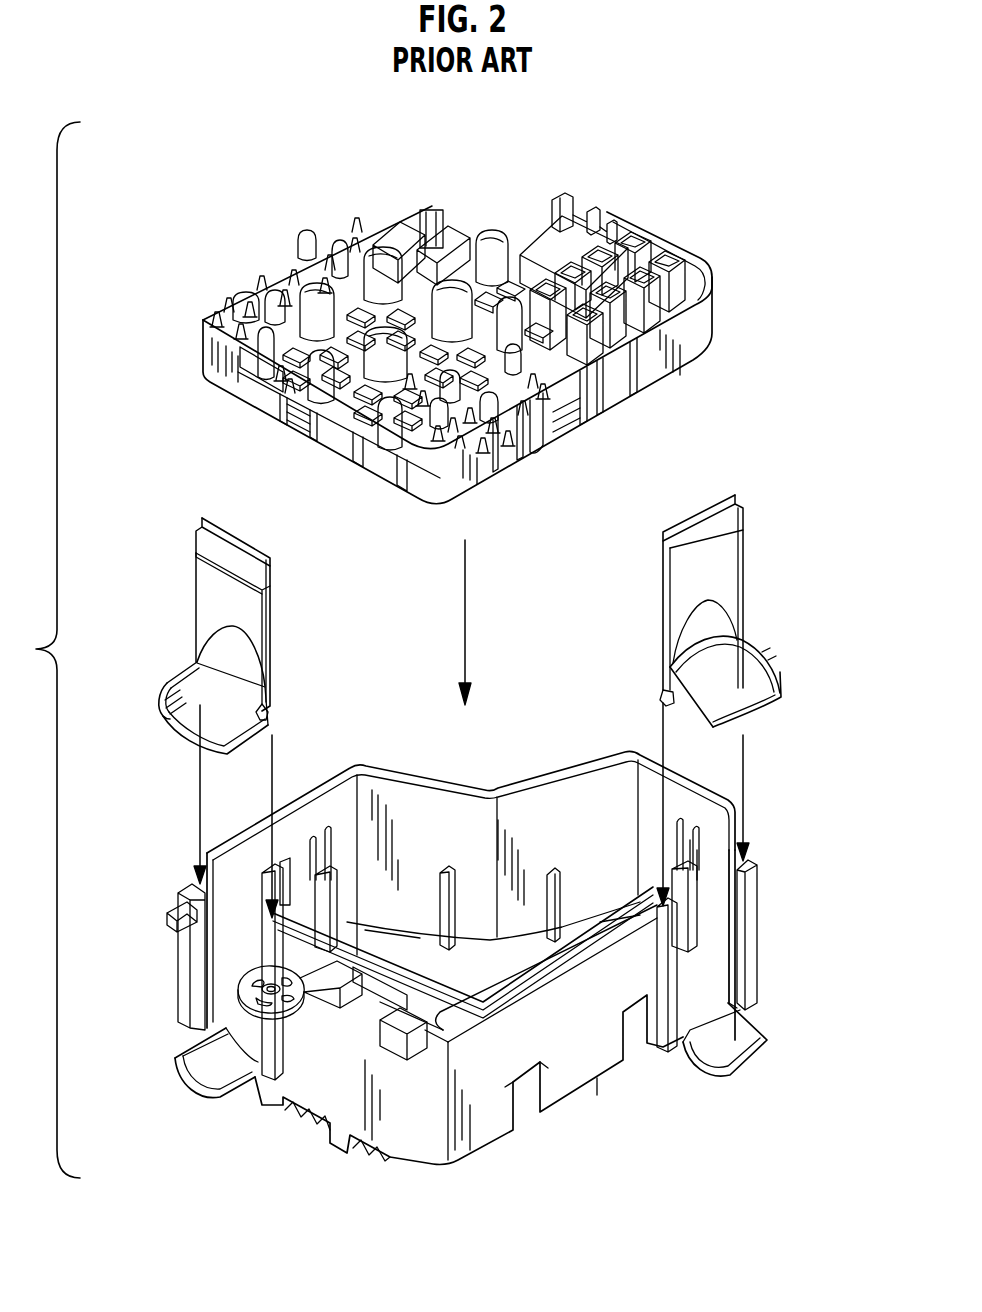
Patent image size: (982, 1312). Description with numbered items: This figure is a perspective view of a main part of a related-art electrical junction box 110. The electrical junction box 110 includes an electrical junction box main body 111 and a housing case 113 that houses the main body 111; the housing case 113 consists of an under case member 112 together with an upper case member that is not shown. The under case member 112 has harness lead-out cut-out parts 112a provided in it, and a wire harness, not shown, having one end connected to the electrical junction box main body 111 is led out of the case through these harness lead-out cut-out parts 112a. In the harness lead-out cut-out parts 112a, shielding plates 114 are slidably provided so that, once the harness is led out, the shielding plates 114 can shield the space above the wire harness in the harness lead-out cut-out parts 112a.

The electrical junction box 110 is at (194, 250).
The electrical junction box main body 111 is at (697, 331).
The under case member 112 is at (702, 782).
The harness lead-out cut-out parts 112a is at (221, 955).
The housing case 113 is at (776, 851).
The shielding plates 114 is at (228, 604).